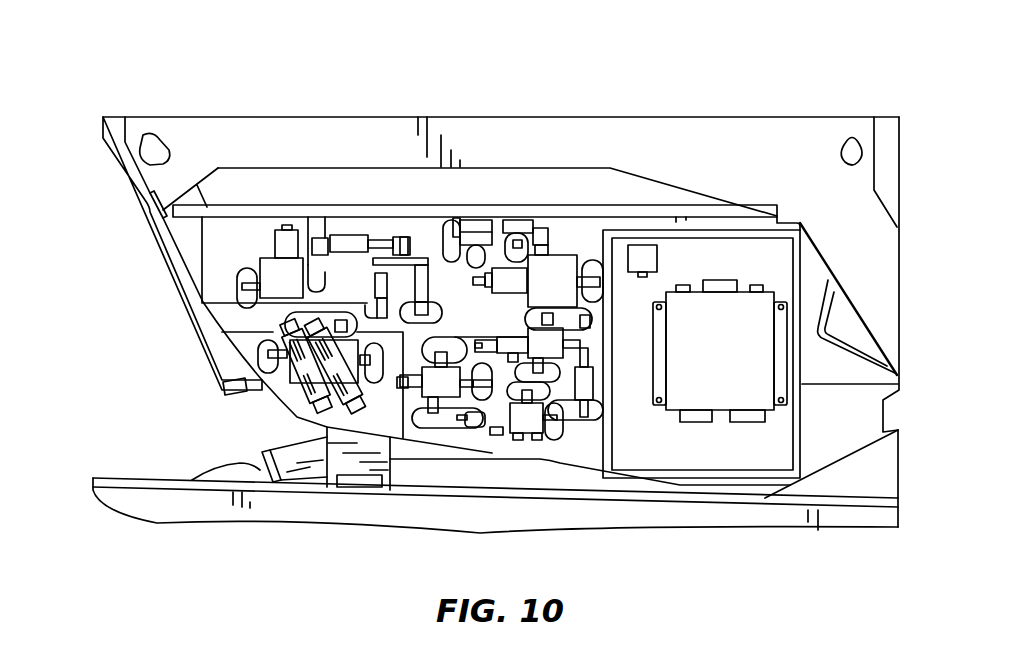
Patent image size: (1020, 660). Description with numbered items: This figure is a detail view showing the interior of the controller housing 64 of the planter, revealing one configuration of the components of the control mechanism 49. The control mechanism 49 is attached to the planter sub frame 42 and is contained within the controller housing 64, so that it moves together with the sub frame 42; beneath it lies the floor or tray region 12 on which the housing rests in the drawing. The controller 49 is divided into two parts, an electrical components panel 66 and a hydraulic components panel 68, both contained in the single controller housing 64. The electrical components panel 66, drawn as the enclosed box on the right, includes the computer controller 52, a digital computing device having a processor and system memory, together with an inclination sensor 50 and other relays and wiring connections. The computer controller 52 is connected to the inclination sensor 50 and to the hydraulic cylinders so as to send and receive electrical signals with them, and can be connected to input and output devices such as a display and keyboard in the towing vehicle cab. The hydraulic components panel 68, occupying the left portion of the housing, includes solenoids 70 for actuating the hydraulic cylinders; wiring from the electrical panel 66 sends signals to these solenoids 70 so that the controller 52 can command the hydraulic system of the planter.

The tray / floor panel 12 is at (138, 478).
The planter sub frame 42 is at (748, 148).
The control mechanism 49 is at (362, 132).
The inclination sensor 50 is at (641, 255).
The computer controller 52 is at (706, 364).
The controller housing 64 is at (270, 208).
The electrical components panel 66 is at (775, 257).
The hydraulic components panel 68 is at (227, 243).
The solenoids 70 is at (322, 350).